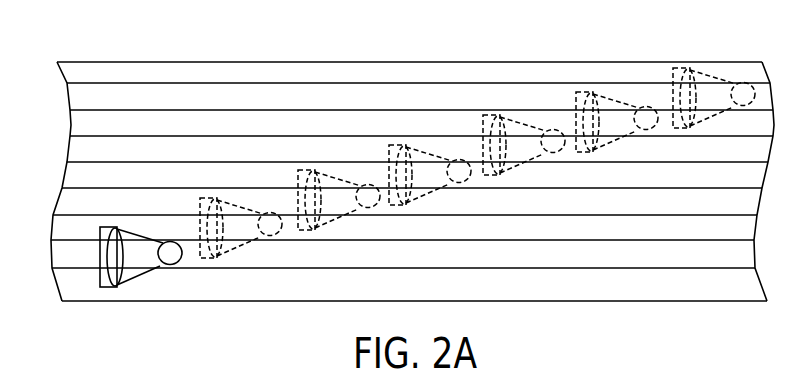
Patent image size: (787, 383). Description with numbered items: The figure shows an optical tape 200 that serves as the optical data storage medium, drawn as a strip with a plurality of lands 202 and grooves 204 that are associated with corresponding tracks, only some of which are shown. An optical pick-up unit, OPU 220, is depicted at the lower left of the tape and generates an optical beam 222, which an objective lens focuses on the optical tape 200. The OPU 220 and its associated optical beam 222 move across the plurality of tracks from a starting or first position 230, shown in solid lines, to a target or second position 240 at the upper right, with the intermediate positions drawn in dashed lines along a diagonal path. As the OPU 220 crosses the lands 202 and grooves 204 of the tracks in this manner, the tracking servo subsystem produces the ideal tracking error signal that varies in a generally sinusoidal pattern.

The optical tape 200 is at (622, 61).
The lands 202 is at (162, 68).
The grooves 204 is at (78, 100).
The optical pick-up unit 220 is at (100, 292).
The optical beam 222 is at (172, 265).
The first position 230 is at (108, 291).
The second position 240 is at (724, 68).